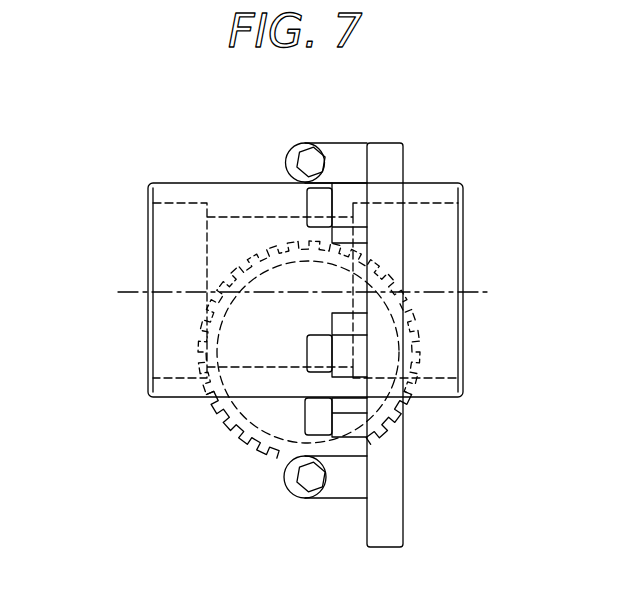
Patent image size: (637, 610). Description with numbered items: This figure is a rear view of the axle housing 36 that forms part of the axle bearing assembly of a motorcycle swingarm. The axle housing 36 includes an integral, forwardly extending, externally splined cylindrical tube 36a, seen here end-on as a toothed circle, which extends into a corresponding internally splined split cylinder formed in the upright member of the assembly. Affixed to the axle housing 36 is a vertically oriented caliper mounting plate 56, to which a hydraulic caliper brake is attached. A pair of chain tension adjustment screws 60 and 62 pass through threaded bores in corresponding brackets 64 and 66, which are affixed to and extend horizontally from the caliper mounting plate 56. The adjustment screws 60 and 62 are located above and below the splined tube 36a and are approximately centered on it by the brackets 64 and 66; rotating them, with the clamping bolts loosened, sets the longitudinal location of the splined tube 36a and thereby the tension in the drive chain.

The axle housing 36 is at (168, 245).
The splined tube 36a is at (235, 432).
The caliper mounting plate 56 is at (392, 473).
The chain tension adjustment screw 60 is at (308, 160).
The chain tension adjustment screw 62 is at (307, 479).
The bracket 64 is at (347, 160).
The bracket 66 is at (353, 485).